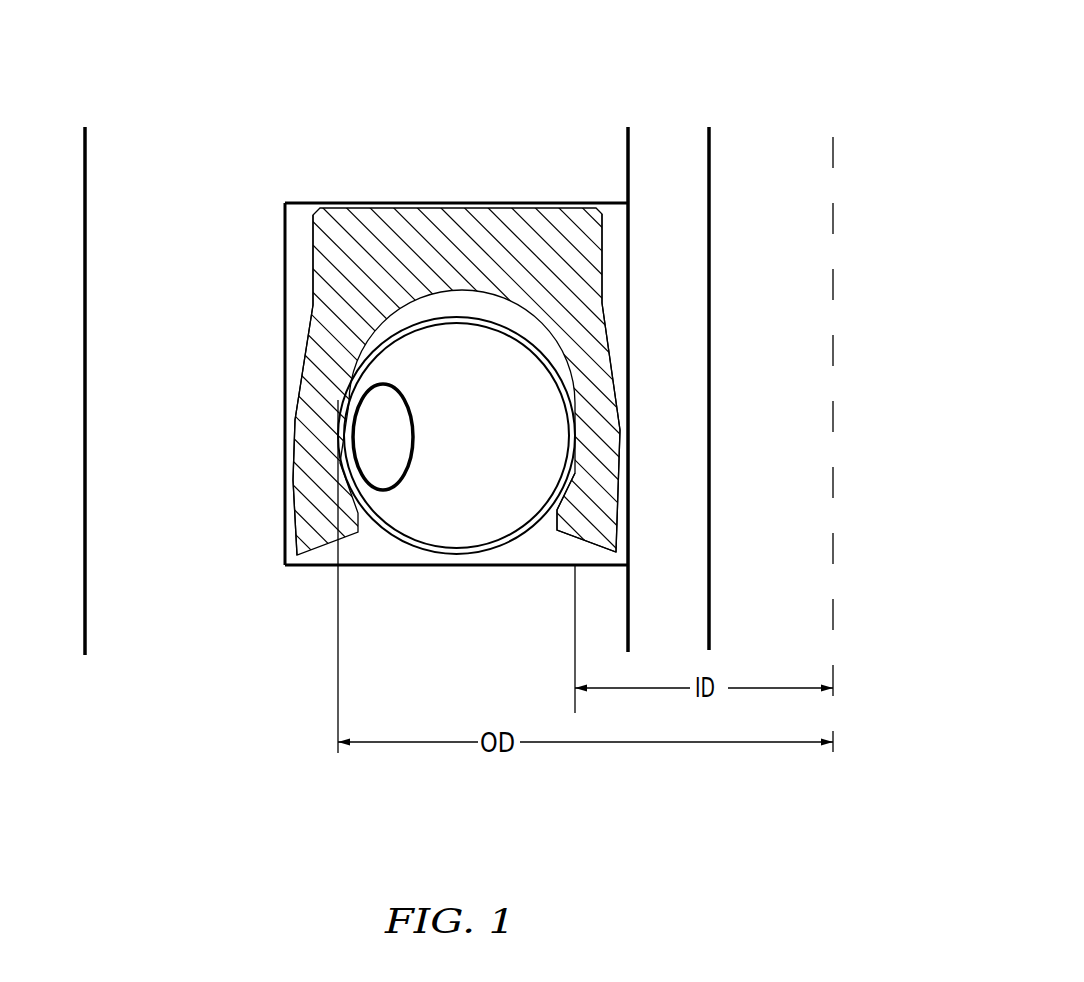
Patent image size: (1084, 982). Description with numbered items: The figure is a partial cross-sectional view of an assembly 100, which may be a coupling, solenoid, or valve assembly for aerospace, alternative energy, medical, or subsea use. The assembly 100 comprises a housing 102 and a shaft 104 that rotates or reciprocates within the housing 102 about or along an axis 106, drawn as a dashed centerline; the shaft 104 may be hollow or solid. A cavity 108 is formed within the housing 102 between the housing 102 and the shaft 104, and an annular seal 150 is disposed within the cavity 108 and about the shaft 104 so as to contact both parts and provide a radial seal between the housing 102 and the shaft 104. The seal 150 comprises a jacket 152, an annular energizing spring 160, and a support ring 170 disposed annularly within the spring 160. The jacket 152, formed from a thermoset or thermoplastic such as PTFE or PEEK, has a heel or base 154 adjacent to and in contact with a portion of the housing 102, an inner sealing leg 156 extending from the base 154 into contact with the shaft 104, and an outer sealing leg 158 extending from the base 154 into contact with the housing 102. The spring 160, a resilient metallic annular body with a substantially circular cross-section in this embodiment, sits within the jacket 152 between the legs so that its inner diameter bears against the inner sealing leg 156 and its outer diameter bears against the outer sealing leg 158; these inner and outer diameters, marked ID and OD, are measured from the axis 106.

The assembly 100 is at (670, 66).
The housing 102 is at (200, 383).
The shaft 104 is at (712, 298).
The axis 106 is at (835, 222).
The cavity 108 is at (365, 554).
The annular seal 150 is at (527, 551).
The jacket 152 is at (595, 562).
The base 154 is at (487, 203).
The inner sealing leg 156 is at (618, 385).
The outer sealing leg 158 is at (305, 347).
The spring 160 is at (452, 553).
The support ring 170 is at (397, 376).